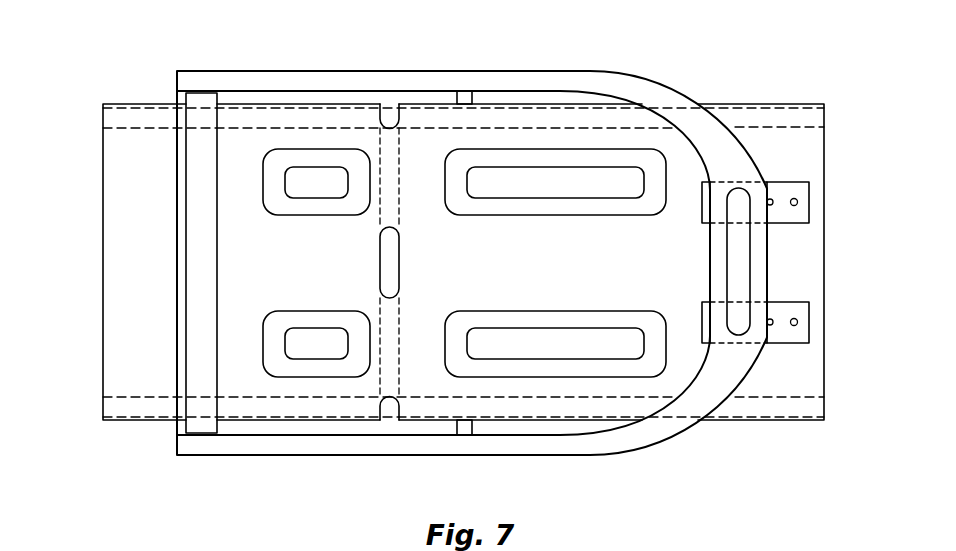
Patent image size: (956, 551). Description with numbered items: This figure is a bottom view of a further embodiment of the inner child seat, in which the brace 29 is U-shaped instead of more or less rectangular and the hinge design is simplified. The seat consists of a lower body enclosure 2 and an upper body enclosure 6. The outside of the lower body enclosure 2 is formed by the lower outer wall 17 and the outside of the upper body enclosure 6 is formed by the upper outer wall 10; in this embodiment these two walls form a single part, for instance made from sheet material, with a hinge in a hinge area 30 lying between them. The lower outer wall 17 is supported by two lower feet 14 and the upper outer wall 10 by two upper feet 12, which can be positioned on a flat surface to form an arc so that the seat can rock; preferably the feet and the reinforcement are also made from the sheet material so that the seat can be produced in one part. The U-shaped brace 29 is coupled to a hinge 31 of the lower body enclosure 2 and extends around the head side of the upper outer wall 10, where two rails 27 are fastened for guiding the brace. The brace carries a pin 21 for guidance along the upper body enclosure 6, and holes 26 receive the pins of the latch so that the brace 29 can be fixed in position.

The lower body enclosure 2 is at (135, 77).
The upper body enclosure 6 is at (779, 465).
The upper outer wall 10 is at (429, 262).
The upper feet 12 is at (633, 205).
The lower feet 14 is at (330, 205).
The lower outer wall 17 is at (463, 262).
The pin 21 is at (461, 91).
The holes 26 is at (798, 201).
The rails 27 is at (797, 216).
The U-shaped brace 29 is at (745, 150).
The hinge area 30 is at (390, 328).
The hinge 31 is at (203, 260).